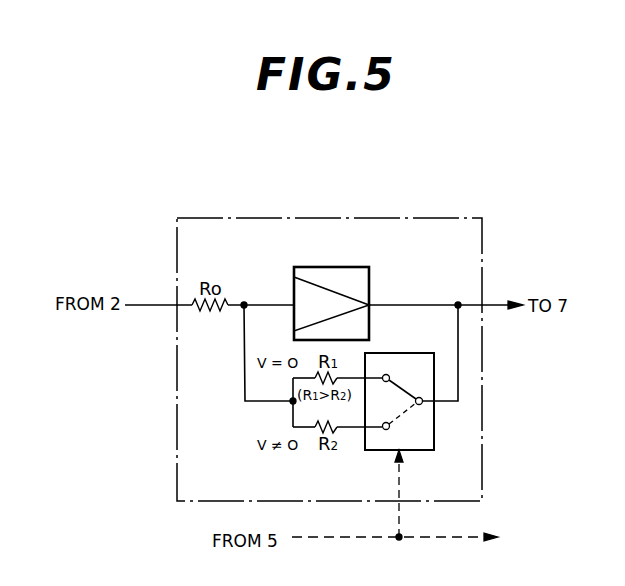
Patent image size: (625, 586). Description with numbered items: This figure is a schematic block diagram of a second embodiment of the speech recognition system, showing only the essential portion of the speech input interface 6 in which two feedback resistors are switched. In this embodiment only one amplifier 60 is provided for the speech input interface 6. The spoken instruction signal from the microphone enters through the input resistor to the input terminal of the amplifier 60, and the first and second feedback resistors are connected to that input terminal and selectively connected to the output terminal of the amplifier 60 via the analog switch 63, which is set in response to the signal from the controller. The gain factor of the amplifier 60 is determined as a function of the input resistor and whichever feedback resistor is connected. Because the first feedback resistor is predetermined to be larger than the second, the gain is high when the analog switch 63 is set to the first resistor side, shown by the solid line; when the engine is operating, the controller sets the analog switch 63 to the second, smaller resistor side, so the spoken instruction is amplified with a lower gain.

The speech input interface 6 is at (423, 218).
The amplifier 60 is at (352, 267).
The analog switch 63 is at (434, 436).